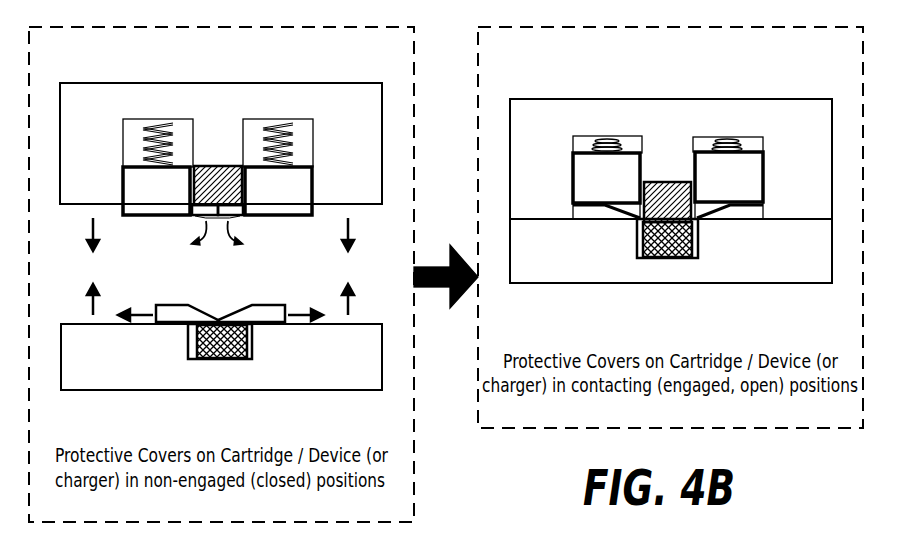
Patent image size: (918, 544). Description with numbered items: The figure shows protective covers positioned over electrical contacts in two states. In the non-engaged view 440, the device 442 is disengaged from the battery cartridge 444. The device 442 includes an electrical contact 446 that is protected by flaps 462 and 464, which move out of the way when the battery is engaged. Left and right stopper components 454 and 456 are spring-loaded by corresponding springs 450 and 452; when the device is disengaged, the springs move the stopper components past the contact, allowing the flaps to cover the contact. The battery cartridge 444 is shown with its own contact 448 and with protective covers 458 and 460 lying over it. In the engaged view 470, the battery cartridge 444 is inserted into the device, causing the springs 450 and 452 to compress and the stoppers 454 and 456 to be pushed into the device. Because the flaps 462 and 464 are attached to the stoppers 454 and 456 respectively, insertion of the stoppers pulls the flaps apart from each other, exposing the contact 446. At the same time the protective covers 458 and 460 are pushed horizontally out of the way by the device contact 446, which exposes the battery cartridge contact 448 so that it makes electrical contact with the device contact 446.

The non-engaged view 440 is at (207, 512).
The engaged view 470 is at (655, 418).
The device 442 is at (335, 117).
The battery cartridge 444 is at (335, 373).
The electrical contact 446 is at (409, 152).
The battery cartridge contact 448 is at (471, 324).
The spring 450 is at (352, 136).
The spring 452 is at (503, 135).
The left stopper component 454 is at (351, 181).
The right stopper component 456 is at (533, 183).
The protective cover 458 is at (374, 262).
The protective cover 460 is at (509, 262).
The flap 462 is at (384, 241).
The flap 464 is at (496, 235).